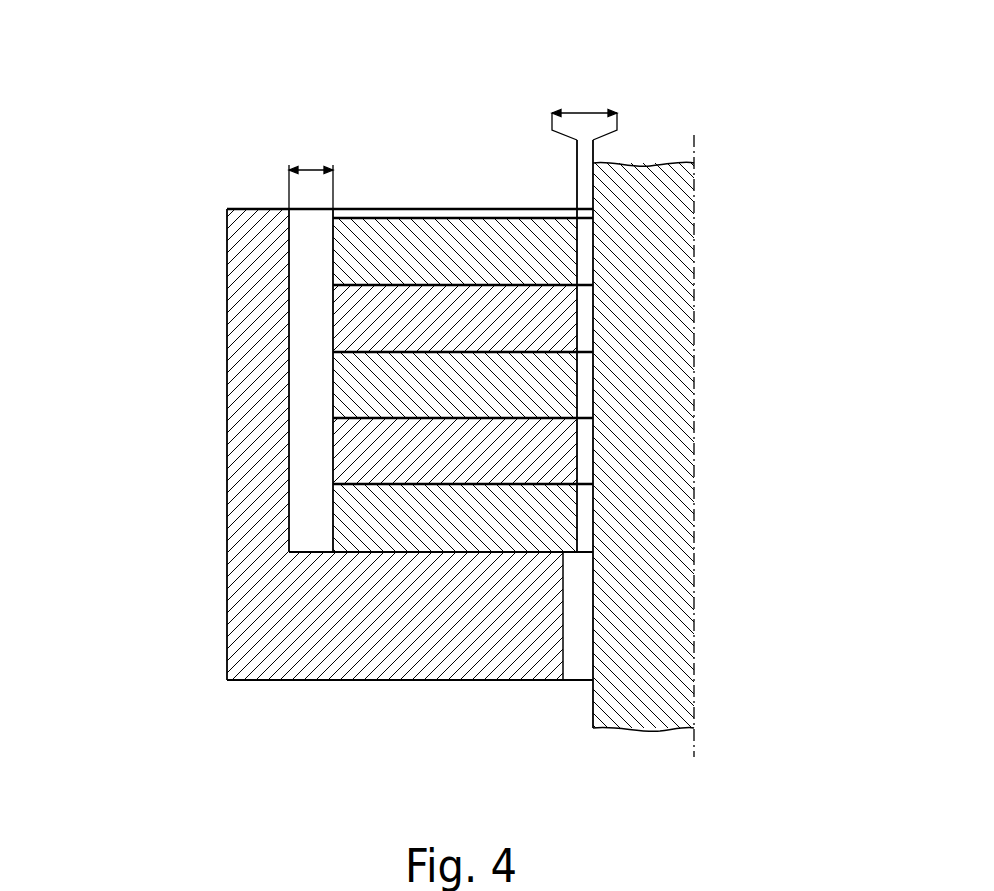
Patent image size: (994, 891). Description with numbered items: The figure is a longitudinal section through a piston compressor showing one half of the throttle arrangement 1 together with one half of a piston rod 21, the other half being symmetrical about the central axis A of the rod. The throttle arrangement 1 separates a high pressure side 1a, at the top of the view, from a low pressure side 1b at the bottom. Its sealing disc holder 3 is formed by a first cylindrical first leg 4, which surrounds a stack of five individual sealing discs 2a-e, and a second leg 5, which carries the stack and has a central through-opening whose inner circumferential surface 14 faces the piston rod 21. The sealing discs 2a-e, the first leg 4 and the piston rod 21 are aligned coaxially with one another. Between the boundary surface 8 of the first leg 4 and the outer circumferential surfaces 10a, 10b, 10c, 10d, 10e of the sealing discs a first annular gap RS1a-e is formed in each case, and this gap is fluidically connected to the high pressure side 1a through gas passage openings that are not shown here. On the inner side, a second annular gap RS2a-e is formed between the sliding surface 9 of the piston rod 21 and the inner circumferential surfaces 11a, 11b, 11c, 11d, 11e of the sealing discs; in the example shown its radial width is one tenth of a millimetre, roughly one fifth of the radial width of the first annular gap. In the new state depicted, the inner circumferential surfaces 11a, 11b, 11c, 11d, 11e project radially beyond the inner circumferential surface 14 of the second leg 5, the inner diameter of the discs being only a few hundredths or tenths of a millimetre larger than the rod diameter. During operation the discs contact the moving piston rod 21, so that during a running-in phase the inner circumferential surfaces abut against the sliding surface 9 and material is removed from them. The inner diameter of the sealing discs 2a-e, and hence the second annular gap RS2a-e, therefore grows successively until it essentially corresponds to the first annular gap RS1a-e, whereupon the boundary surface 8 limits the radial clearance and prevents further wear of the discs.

The throttle arrangement 1 is at (403, 97).
The high pressure side 1a is at (463, 76).
The low pressure side 1b is at (465, 751).
The sealing discs 2a-e is at (117, 235).
The sealing disc holder 3 is at (217, 597).
The first leg 4 is at (243, 222).
The second leg 5 is at (245, 653).
The boundary surface 8 is at (288, 212).
The sliding surface 9 is at (593, 162).
The outer circumferential surface 10a is at (333, 253).
The outer circumferential surface 10b is at (333, 318).
The outer circumferential surface 10c is at (333, 385).
The outer circumferential surface 10d is at (333, 450).
The outer circumferential surface 10e is at (333, 516).
The inner circumferential surface 11a is at (578, 257).
The inner circumferential surface 11b is at (578, 322).
The inner circumferential surface 11c is at (578, 390).
The inner circumferential surface 11d is at (578, 456).
The inner circumferential surface 11e is at (578, 524).
The inner circumferential surface of the central through-opening 14 is at (533, 640).
The piston rod 21 is at (675, 190).
The first annular gap RS1a-e is at (316, 169).
The second annular gap RS2a-e is at (583, 110).
The axis A is at (694, 464).